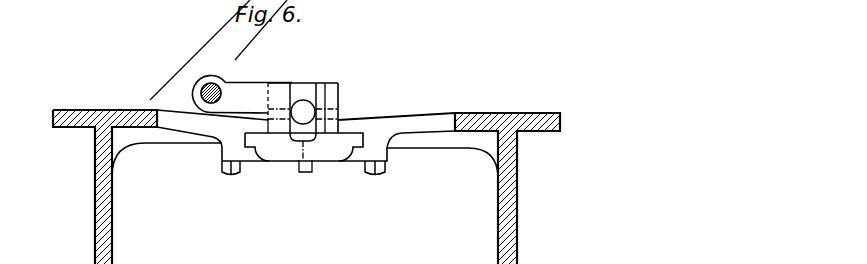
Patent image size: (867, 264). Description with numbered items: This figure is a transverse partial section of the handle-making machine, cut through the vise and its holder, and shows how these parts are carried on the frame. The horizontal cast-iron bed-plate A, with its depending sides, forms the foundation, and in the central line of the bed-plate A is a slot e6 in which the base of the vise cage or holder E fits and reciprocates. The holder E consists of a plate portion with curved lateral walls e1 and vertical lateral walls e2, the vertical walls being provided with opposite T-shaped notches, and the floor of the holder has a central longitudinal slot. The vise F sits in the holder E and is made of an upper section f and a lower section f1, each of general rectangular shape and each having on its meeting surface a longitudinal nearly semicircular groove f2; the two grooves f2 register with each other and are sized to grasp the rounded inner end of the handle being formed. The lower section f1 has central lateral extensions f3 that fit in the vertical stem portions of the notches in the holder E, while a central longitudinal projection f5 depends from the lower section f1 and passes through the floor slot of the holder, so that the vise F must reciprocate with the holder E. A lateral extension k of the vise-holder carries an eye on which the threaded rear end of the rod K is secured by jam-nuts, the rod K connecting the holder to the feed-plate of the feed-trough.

The bed-plate A is at (545, 134).
The vise cage or holder E is at (251, 88).
The rod K is at (195, 72).
The lateral extension of the vise-holder k is at (213, 76).
The vertical lateral walls e2 is at (277, 91).
The vise F is at (323, 88).
The upper section of the vise f is at (314, 88).
The longitudinal nearly semicircular groove f2 is at (309, 130).
The lower section of the vise f1 is at (300, 131).
The central longitudinal projection f5 is at (306, 172).
The curved lateral walls e1 is at (338, 107).
The lateral extensions f3 is at (376, 114).
The slot in the bed-plate e6 is at (256, 149).